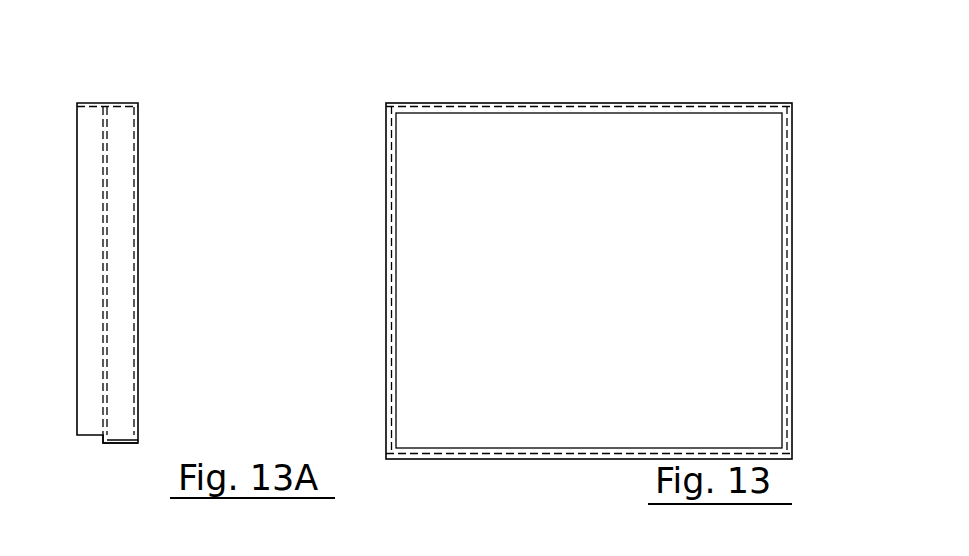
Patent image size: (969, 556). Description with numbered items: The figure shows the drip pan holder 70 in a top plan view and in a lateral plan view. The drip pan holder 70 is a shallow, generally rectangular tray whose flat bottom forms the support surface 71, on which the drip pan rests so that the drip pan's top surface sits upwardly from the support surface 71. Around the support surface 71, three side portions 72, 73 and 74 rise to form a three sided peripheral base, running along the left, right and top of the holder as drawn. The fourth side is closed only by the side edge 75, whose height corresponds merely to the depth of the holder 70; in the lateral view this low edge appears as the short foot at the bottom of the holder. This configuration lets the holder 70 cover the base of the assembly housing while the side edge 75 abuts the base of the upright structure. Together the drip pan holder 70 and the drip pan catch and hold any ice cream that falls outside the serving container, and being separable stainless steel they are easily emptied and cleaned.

In FIG. 13A, the drip pan holder 70 is at (158, 273).
In FIG. 13, the drip pan holder 70 is at (641, 264).
In FIG. 13A, the support surface 71 is at (160, 271).
In FIG. 13, the support surface 71 is at (644, 280).
In FIG. 13, the side portion 72 is at (332, 279).
In FIG. 13, the side portion 73 is at (844, 279).
In FIG. 13A, the side portion 74 is at (90, 54).
In FIG. 13, the side portion 74 is at (556, 83).
In FIG. 13A, the side edge 75 is at (209, 452).
In FIG. 13, the side edge 75 is at (589, 486).